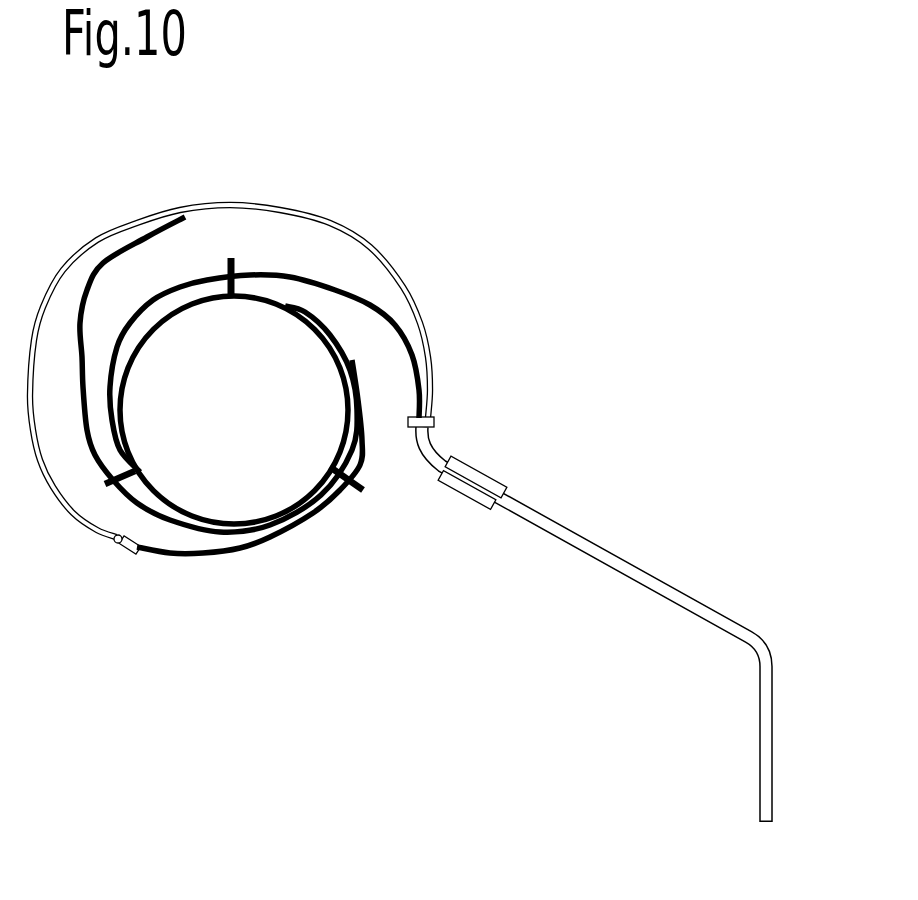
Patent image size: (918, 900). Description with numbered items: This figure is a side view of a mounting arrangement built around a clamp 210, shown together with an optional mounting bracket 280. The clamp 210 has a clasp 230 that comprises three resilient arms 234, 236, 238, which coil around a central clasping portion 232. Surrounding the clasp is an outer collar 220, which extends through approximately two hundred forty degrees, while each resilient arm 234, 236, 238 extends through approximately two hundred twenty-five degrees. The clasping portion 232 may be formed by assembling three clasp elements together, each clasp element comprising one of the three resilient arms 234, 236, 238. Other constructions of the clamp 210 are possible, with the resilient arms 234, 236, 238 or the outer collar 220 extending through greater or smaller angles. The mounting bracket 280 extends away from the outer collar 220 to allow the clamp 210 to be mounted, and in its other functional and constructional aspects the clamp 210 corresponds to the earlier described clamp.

The clamp 210 is at (75, 250).
The outer collar 220 is at (415, 303).
The clasp 230 is at (236, 562).
The clasping portion 232 is at (313, 490).
The resilient arm 234 is at (280, 535).
The resilient arm 236 is at (87, 430).
The resilient arm 238 is at (338, 290).
The mounting bracket 280 is at (757, 742).